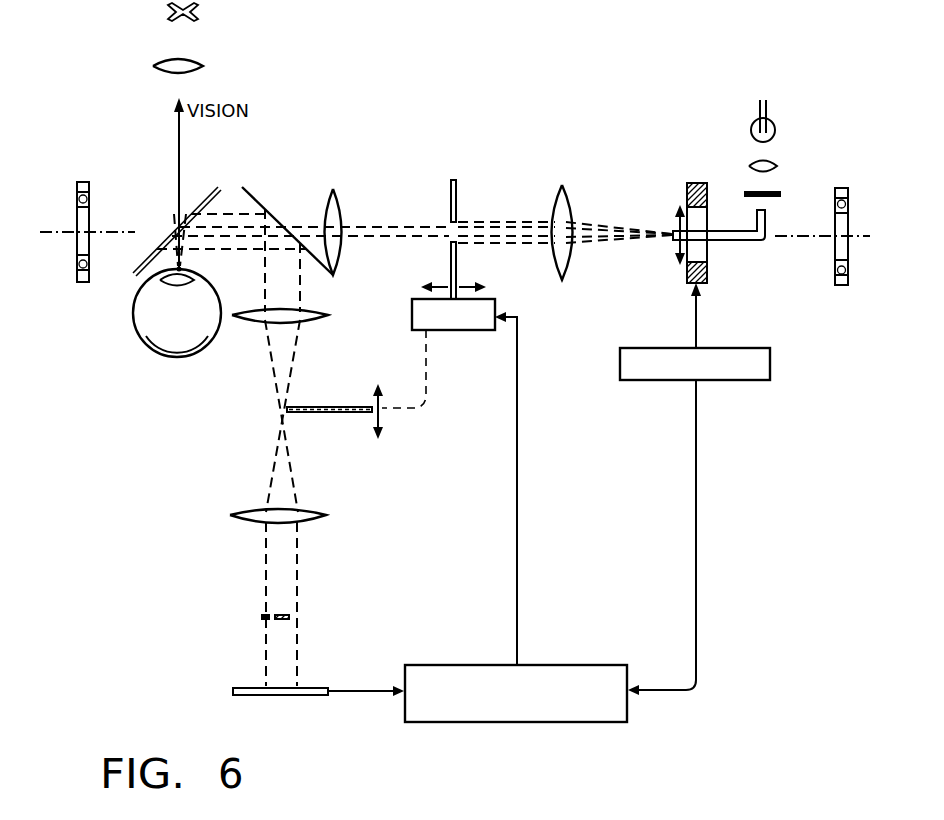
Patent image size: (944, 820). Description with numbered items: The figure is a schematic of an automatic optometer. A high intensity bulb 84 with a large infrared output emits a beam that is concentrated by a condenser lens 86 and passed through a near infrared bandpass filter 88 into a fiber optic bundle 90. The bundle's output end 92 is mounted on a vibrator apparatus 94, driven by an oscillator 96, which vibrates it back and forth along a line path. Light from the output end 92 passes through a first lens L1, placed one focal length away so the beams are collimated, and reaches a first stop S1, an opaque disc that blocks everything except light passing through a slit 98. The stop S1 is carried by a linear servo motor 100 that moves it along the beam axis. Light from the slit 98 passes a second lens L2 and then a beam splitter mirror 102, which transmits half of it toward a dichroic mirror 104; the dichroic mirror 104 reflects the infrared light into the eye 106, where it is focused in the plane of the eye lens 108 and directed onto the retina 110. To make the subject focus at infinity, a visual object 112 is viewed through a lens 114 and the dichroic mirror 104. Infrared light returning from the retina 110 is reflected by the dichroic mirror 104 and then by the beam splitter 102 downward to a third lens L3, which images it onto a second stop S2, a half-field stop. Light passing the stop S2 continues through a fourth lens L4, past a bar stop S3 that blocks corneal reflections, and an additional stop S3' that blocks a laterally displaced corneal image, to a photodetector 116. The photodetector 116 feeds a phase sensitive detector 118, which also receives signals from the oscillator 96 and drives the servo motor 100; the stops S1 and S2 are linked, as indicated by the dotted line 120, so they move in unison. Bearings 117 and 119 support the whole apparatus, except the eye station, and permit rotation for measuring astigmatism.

The high intensity bulb 84 is at (775, 127).
The condenser lens 86 is at (777, 164).
The near infrared bandpass filter 88 is at (780, 193).
The fiber optic bundle 90 is at (766, 215).
The output end of the fiber optic bundle 92 is at (672, 237).
The vibrator apparatus 94 is at (707, 275).
The oscillator 96 is at (770, 362).
The slit 98 is at (450, 221).
The linear servo motor 100 is at (412, 320).
The beam splitter mirror 102 is at (250, 190).
The dichroic mirror 104 is at (205, 186).
The eye 106 is at (158, 355).
The eye lens 108 is at (195, 282).
The retina 110 is at (190, 344).
The visual object 112 is at (199, 12).
The lens 114 is at (195, 62).
The photodetector 116 is at (233, 691).
The bearing 117 is at (70, 272).
The phase sensitive detector 118 is at (627, 705).
The bearing 119 is at (834, 277).
The dotted line 120 is at (428, 378).
The first lens L1 is at (567, 190).
The second lens L2 is at (338, 195).
The third lens L3 is at (328, 313).
The fourth lens L4 is at (314, 513).
The first stop S1 is at (457, 181).
The second stop S2 is at (322, 413).
The third stop S3 is at (301, 599).
The additional stop S3' is at (241, 624).